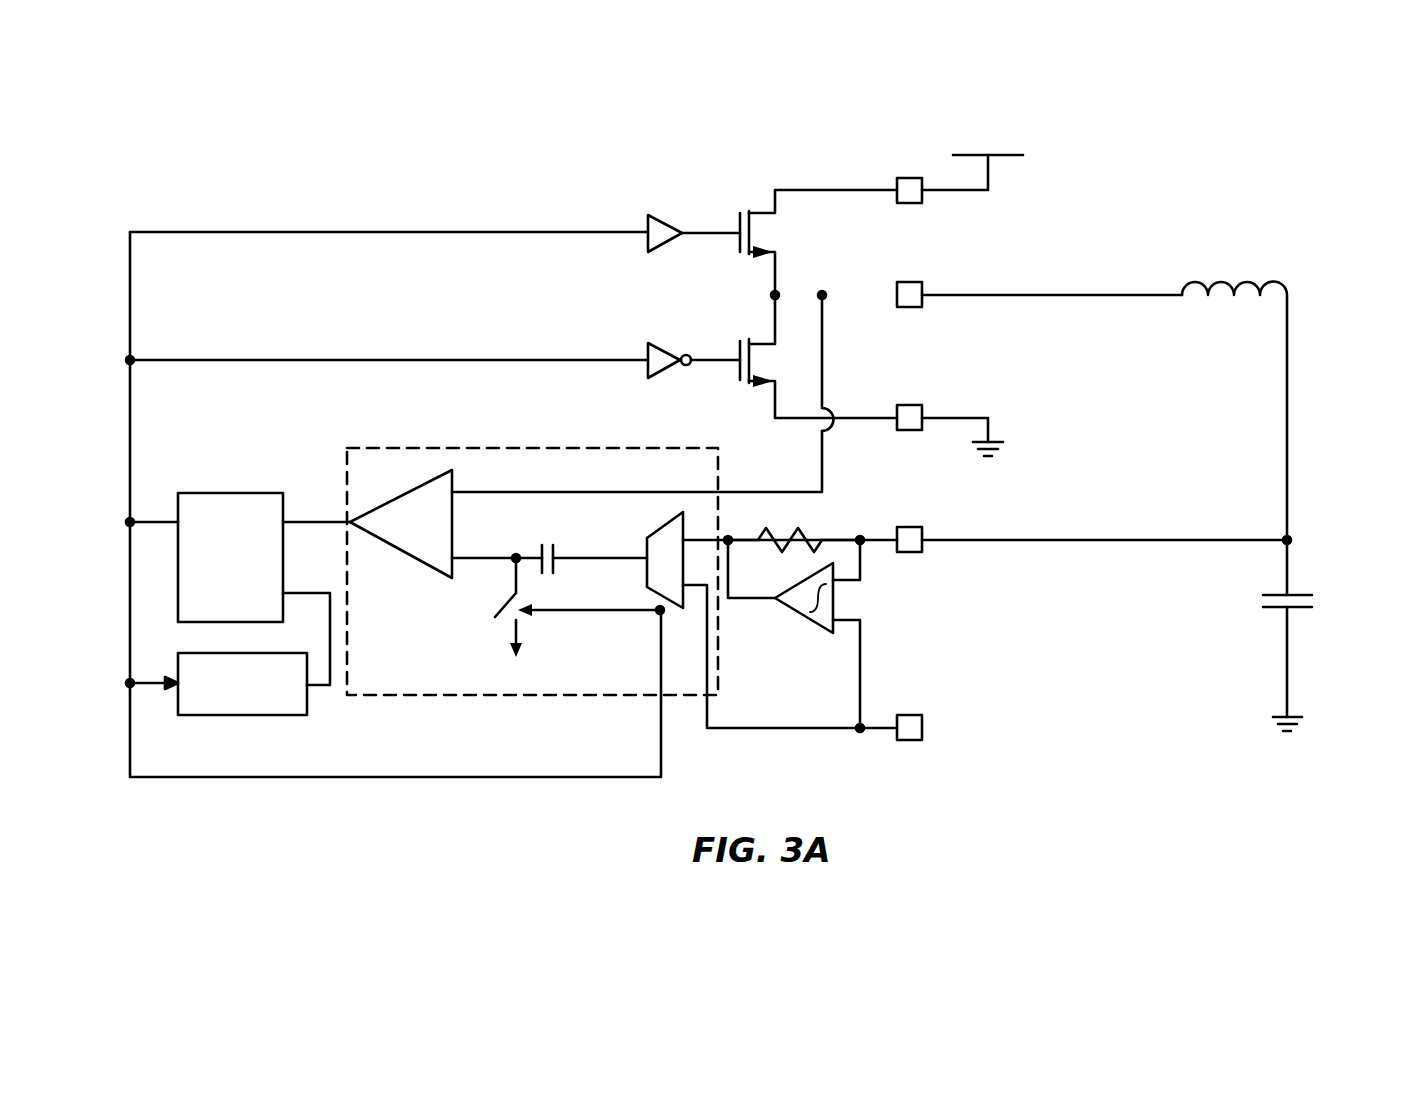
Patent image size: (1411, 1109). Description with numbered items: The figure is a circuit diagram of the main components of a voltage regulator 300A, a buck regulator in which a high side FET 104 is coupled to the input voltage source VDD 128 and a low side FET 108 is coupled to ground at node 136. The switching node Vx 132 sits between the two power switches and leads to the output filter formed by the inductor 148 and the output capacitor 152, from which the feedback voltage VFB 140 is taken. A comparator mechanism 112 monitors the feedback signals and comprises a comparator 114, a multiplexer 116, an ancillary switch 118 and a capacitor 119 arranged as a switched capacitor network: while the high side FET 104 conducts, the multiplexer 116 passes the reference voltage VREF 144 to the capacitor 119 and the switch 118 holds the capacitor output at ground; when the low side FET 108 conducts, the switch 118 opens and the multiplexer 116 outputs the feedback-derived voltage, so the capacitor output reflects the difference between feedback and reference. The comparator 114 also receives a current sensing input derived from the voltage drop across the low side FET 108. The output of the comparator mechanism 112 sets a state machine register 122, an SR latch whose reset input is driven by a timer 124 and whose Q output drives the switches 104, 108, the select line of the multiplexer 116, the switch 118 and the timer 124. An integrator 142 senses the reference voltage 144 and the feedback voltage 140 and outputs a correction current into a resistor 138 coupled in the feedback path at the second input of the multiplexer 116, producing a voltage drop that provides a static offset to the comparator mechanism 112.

The voltage regulator 300A is at (1310, 97).
The high side FET (switch) 104 is at (722, 188).
The low side FET (switch) 108 is at (724, 330).
The comparator mechanism 112 is at (517, 447).
The comparator 114 is at (422, 480).
The multiplexer 116 is at (655, 530).
The ancillary switch 118 is at (490, 640).
The capacitor 119 is at (546, 543).
The state machine register 122 is at (233, 493).
The timer block 124 is at (225, 715).
The input voltage source (VDD) 128 is at (1005, 155).
The switching node Vx 132 is at (945, 265).
The ground node (Gnd) 136 is at (945, 388).
The resistor 138 is at (808, 532).
The feedback voltage (VFB) 140 is at (937, 512).
The integrator 142 is at (820, 630).
The reference voltage (VREF) 144 is at (940, 712).
The inductor 148 is at (1228, 284).
The output capacitor 152 is at (1297, 610).